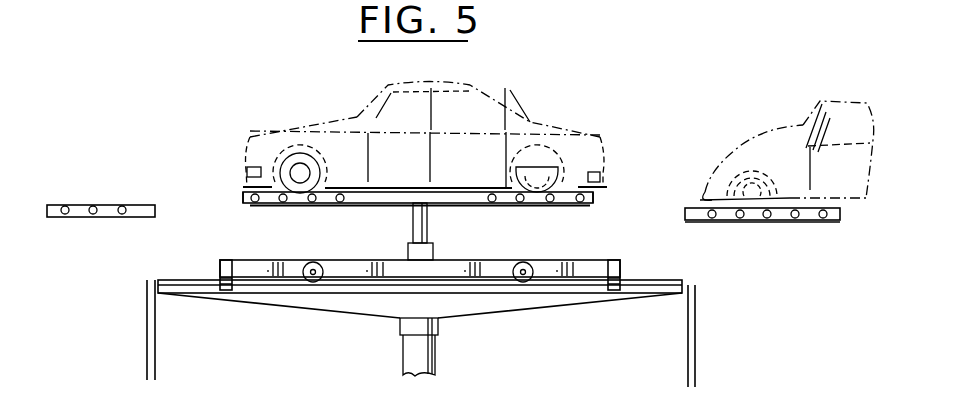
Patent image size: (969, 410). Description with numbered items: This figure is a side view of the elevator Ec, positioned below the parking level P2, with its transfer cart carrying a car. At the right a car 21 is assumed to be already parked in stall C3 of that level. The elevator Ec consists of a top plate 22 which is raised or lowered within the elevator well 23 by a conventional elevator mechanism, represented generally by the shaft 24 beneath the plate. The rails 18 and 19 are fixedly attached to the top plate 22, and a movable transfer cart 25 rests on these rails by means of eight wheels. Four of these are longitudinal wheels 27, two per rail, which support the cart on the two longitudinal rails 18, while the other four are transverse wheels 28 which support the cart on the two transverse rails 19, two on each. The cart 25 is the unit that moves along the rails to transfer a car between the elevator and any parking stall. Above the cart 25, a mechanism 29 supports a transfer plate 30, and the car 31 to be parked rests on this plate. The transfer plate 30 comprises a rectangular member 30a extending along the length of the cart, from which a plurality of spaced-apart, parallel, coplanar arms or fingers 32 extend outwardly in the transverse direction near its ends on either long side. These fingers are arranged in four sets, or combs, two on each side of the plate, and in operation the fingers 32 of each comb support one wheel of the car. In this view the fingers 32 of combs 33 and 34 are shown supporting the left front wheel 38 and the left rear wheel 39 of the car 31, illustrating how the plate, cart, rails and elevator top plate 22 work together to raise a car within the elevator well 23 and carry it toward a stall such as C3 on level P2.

The longitudinal rails 18 is at (265, 286).
The transverse rails 19 is at (225, 287).
The car 21 is at (775, 138).
The top plate 22 is at (582, 296).
The elevator well 23 is at (155, 367).
The shaft 24 is at (409, 359).
The transfer cart 25 is at (592, 259).
The longitudinal wheels 27 is at (311, 284).
The transverse wheels 28 is at (222, 268).
The mechanism 29 is at (423, 231).
The transfer plate 30 is at (483, 207).
The rectangular member 30a is at (388, 204).
The car 31 is at (506, 108).
The fingers 32 is at (342, 202).
The comb 33 is at (240, 194).
The comb 34 is at (597, 199).
The left front wheel 38 is at (296, 167).
The left rear wheel 39 is at (540, 168).
The elevator Ec is at (197, 302).
The parking level P2 is at (782, 228).
The stall C3 is at (807, 220).